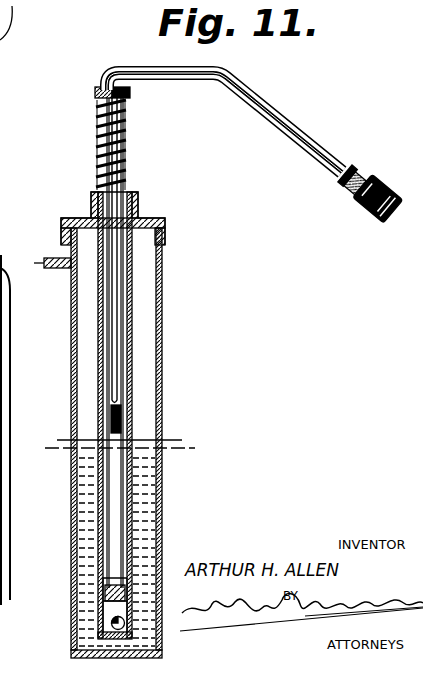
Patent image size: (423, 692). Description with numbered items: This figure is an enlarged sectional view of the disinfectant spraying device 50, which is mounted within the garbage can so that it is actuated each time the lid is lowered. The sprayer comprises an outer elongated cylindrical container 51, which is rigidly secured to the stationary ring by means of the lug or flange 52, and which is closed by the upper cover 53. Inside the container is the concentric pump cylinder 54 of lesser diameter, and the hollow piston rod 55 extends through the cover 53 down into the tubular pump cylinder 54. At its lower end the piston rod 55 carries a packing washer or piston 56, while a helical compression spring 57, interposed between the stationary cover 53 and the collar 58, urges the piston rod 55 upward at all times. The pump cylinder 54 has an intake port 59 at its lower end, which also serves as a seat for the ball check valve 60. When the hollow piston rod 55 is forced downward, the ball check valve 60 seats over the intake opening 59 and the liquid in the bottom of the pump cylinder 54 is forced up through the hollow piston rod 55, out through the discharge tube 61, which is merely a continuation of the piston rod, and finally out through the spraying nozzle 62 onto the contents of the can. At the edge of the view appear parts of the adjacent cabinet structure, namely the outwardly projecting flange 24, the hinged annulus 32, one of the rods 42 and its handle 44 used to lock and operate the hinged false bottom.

The rods 42 is at (29, 26).
The outwardly projecting flange 24 is at (0, 349).
The annulus 32 is at (14, 389).
The handles 44 is at (0, 500).
The spraying device 50 is at (167, 342).
The outer elongated cylindrical container 51 is at (159, 313).
The lug or flange 52 is at (60, 269).
The upper cover 53 is at (152, 214).
The concentric pump cylinder 54 is at (132, 396).
The hollow piston rod 55 is at (112, 373).
The packing washer or piston 56 is at (107, 578).
The helical compression spring 57 is at (123, 147).
The collar 58 is at (127, 93).
The intake port 59 is at (118, 639).
The ball check valve 60 is at (110, 621).
The discharge tube 61 is at (291, 138).
The spraying nozzle 62 is at (380, 223).